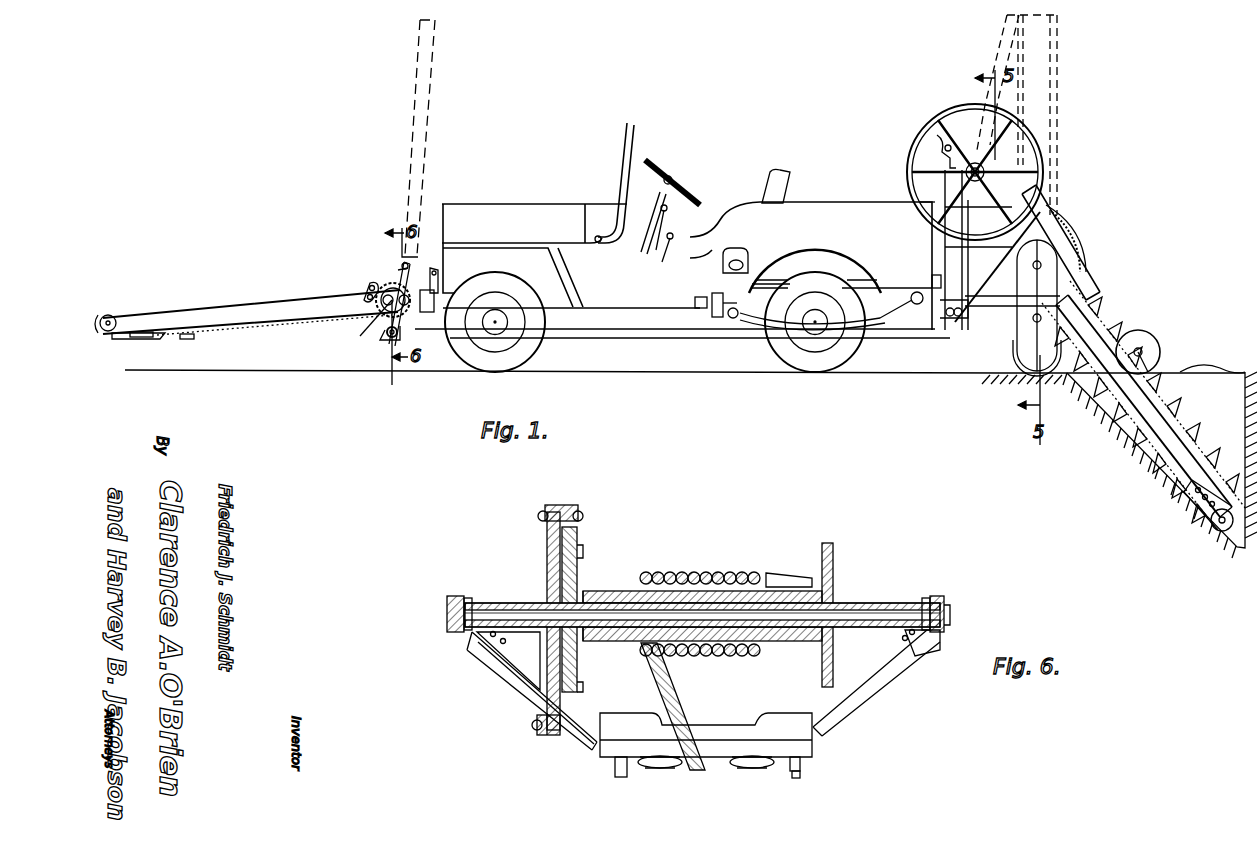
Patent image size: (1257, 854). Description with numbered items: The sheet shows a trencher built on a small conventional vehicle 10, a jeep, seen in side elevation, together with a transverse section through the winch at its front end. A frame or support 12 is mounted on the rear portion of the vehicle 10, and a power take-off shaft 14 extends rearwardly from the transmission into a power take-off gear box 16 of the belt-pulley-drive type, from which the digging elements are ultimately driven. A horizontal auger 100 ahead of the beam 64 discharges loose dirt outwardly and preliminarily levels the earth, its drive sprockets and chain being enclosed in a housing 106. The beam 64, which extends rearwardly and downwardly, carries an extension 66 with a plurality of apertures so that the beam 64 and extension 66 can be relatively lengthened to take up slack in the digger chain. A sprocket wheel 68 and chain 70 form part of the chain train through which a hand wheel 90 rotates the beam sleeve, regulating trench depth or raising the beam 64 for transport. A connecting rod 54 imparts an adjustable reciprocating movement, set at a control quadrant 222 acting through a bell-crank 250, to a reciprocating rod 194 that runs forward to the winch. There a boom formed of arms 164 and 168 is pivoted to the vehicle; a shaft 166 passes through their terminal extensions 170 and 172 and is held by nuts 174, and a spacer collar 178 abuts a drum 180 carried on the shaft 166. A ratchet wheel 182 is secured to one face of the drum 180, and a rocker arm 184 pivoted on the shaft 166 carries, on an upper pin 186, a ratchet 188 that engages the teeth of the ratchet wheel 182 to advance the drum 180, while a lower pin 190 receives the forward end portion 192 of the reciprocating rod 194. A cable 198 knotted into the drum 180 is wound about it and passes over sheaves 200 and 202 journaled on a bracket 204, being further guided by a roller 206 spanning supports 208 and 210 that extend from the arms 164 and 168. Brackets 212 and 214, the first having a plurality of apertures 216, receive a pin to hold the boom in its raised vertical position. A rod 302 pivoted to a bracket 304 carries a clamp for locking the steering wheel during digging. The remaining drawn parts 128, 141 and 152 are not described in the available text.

In FIG. 1, the vehicle 10 is at (529, 200).
In FIG. 1, the frame 12 is at (905, 195).
In FIG. 1, the power take-off shaft 14 is at (866, 284).
In FIG. 1, the power take-off gear box 16 is at (936, 300).
In FIG. 1, the connecting rod 54 is at (950, 247).
In FIG. 1, the beam 64 is at (1095, 312).
In FIG. 1, the extension 66 is at (1200, 500).
In FIG. 1, the sprocket wheel 68 is at (1068, 230).
In FIG. 1, the chain 70 is at (1054, 214).
In FIG. 1, the hand wheel 90 is at (925, 135).
In FIG. 1, the horizontal auger 100 is at (1018, 357).
In FIG. 1, the housing 106 is at (1050, 282).
In FIG. 1, the idler wheel 128 is at (1152, 336).
In FIG. 1, the digging teeth 141 is at (1183, 394).
In FIG. 1, the ground surface 152 is at (1213, 357).
In FIG. 6, the arm 164 is at (872, 676).
In FIG. 6, the shaft 166 is at (882, 606).
In FIG. 1, the arm 168 is at (252, 305).
In FIG. 6, the arm 168 is at (527, 682).
In FIG. 6, the terminal extension 170 is at (930, 650).
In FIG. 6, the terminal extension 172 is at (480, 654).
In FIG. 6, the nuts 174 is at (470, 592).
In FIG. 6, the spacer collar 178 is at (508, 630).
In FIG. 6, the drum 180 is at (612, 590).
In FIG. 1, the ratchet wheel 182 is at (380, 280).
In FIG. 6, the ratchet wheel 182 is at (575, 548).
In FIG. 1, the rocker arm 184 is at (385, 325).
In FIG. 6, the rocker arm 184 is at (547, 560).
In FIG. 1, the pin 186 is at (400, 262).
In FIG. 6, the pin 186 is at (560, 508).
In FIG. 1, the ratchet 188 is at (402, 276).
In FIG. 1, the pin 190 is at (388, 340).
In FIG. 6, the pin 190 is at (548, 739).
In FIG. 1, the forward end portion 192 is at (386, 360).
In FIG. 6, the forward end portion 192 is at (535, 728).
In FIG. 1, the reciprocating rod 194 is at (630, 332).
In FIG. 6, the cable 198 is at (688, 704).
In FIG. 6, the sheave 200 is at (755, 772).
In FIG. 6, the sheave 202 is at (660, 772).
In FIG. 6, the bracket 204 is at (806, 745).
In FIG. 1, the roller 206 is at (108, 314).
In FIG. 6, the roller 206 is at (798, 765).
In FIG. 1, the support 208 is at (128, 318).
In FIG. 6, the support 208 is at (797, 774).
In FIG. 6, the support 210 is at (612, 775).
In FIG. 1, the bracket 212 is at (368, 289).
In FIG. 1, the bracket 214 is at (438, 268).
In FIG. 1, the apertures 216 is at (378, 304).
In FIG. 1, the control quadrant 222 is at (935, 142).
In FIG. 1, the bell-crank 250 is at (958, 314).
In FIG. 1, the rod 302 is at (666, 170).
In FIG. 1, the bracket 304 is at (640, 212).